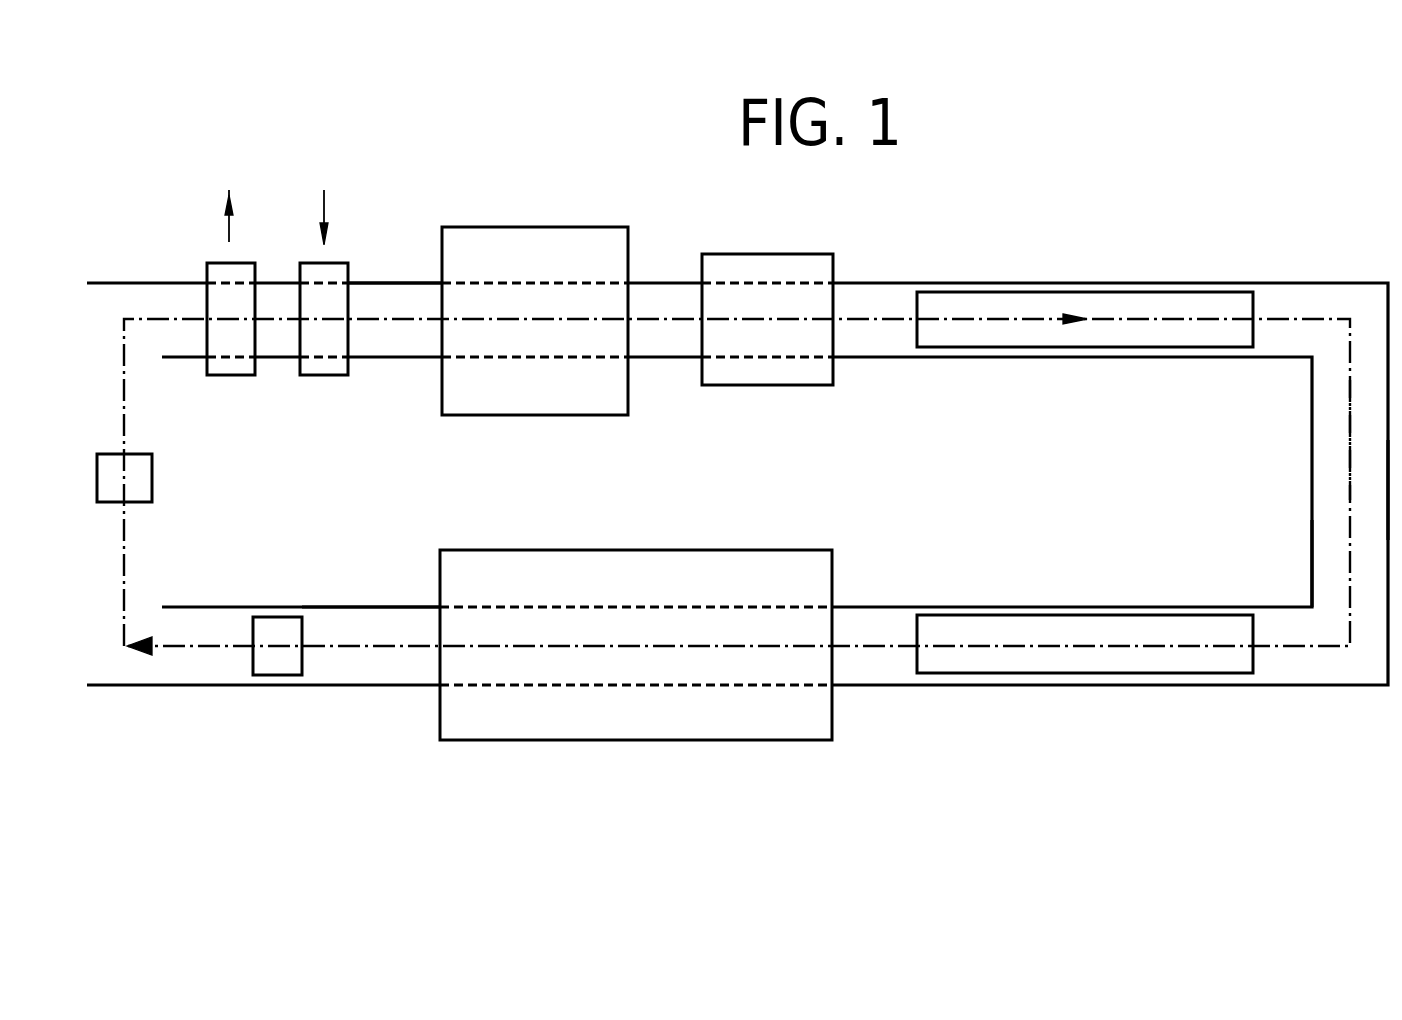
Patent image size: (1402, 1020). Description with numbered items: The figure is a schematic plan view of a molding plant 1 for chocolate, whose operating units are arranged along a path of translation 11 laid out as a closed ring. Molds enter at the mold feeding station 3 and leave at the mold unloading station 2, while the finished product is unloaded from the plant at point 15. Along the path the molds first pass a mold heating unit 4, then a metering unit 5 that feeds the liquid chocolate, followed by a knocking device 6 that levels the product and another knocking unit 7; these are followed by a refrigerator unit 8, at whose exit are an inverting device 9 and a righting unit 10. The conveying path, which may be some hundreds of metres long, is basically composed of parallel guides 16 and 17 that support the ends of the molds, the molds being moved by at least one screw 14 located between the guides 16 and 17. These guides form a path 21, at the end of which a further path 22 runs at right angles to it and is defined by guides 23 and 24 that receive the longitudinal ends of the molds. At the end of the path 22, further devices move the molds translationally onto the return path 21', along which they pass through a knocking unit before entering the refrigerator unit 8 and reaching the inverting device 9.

The molding plant 1 is at (985, 385).
The mold unloading station 2 is at (230, 348).
The mold feeding station 3 is at (320, 348).
The mold heating unit 4 is at (543, 248).
The metering unit 5 is at (780, 270).
The knocking device 6 is at (948, 303).
The knocking unit 7 is at (1100, 623).
The refrigerator unit 8 is at (630, 583).
The inverting device 9 is at (270, 628).
The righting unit 10 is at (137, 482).
The path of translation 11 is at (1295, 415).
The screw 14 is at (660, 320).
The product unloading point 15 is at (165, 645).
The guide 16 is at (408, 282).
The guide 17 is at (408, 360).
The path 21 is at (395, 256).
The path 21' is at (371, 578).
The path 22 is at (1336, 444).
The guide 23 is at (1386, 487).
The guide 24 is at (1310, 560).